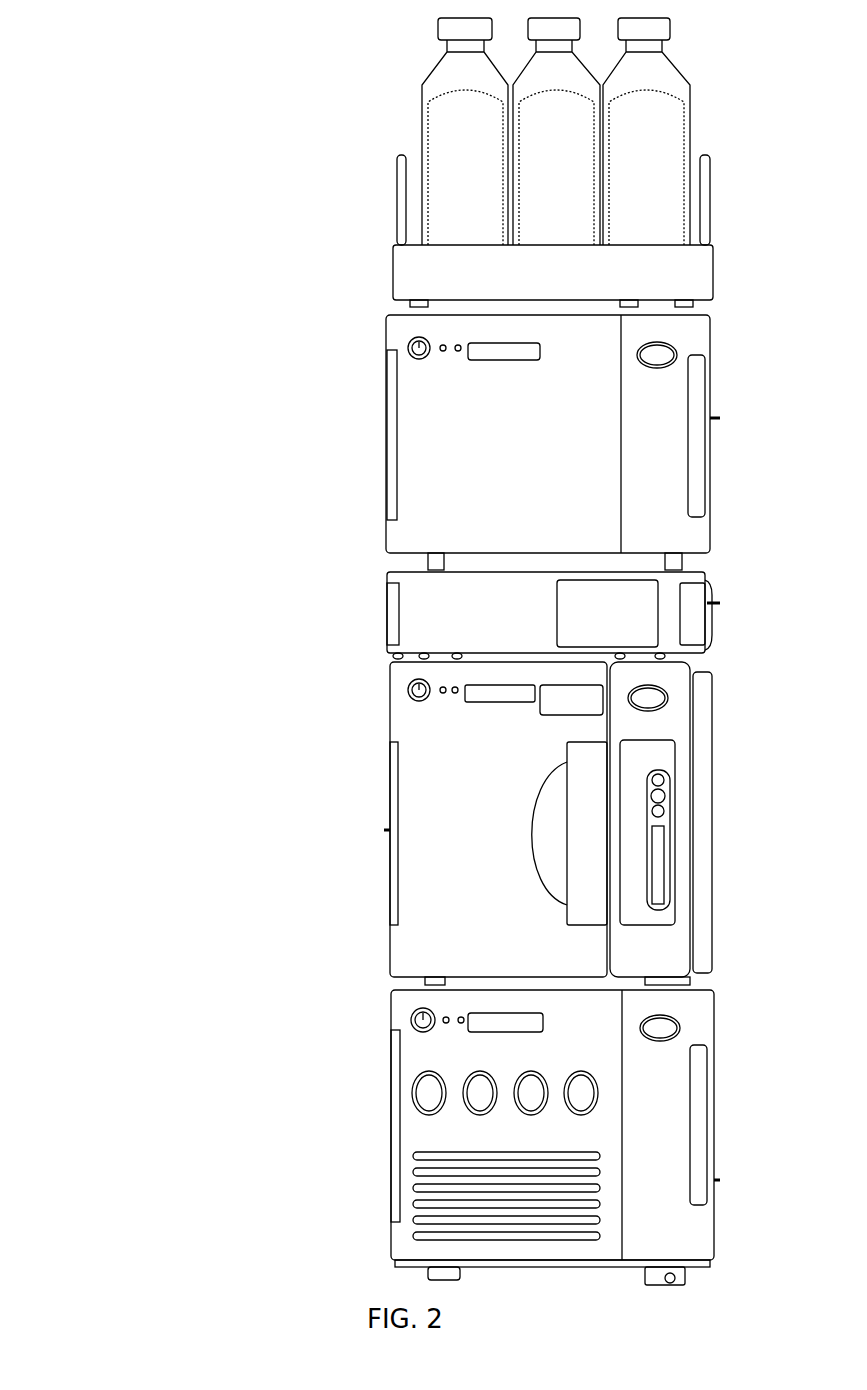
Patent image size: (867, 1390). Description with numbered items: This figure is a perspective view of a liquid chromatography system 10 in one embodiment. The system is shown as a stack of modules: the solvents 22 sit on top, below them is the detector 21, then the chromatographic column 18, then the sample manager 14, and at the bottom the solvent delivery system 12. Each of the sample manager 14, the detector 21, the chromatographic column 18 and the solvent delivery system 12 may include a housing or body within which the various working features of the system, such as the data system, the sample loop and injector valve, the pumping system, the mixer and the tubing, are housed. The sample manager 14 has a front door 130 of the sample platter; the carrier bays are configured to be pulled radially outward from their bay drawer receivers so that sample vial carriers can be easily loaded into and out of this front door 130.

The liquid chromatography system 10 is at (95, 101).
The solvents 22 is at (444, 150).
The detector 21 is at (654, 398).
The chromatographic column 18 is at (668, 592).
The front door 130 is at (420, 748).
The sample manager 14 is at (705, 705).
The solvent delivery system 12 is at (700, 1022).